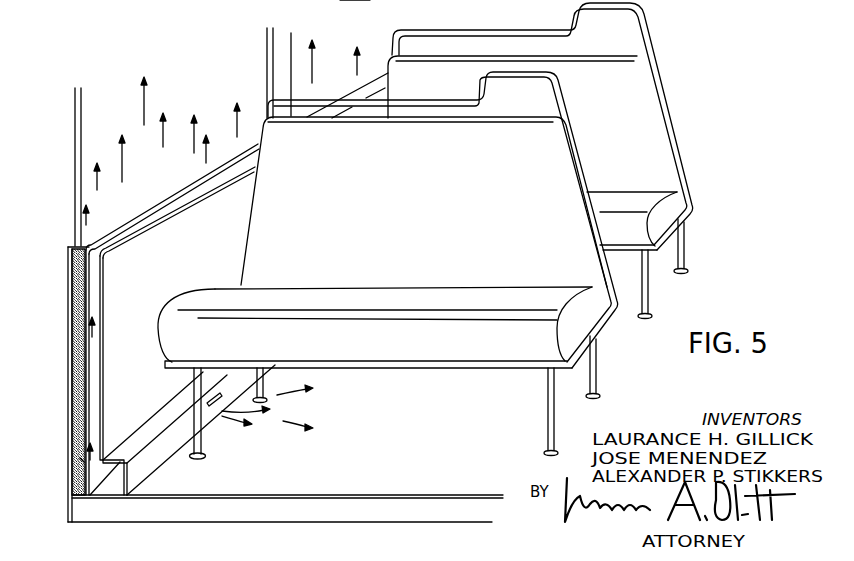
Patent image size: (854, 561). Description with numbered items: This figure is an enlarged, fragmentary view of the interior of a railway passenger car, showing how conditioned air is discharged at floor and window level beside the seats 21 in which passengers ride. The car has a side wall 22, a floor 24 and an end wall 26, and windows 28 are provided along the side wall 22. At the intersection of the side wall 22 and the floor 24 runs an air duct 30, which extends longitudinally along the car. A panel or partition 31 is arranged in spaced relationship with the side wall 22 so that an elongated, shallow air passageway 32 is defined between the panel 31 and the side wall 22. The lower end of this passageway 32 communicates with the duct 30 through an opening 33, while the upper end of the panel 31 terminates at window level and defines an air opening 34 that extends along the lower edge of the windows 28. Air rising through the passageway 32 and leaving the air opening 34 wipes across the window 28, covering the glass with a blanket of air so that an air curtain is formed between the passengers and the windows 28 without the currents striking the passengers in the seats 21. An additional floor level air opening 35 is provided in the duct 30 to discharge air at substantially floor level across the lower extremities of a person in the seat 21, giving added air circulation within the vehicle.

The seats 21 is at (694, 181).
The side wall 22 is at (84, 298).
The floor 24 is at (371, 483).
The end wall 26 is at (355, 3).
The windows 28 is at (121, 112).
The air duct 30 is at (110, 484).
The panel or partition 31 is at (102, 404).
The air passageway 32 is at (96, 367).
The opening 33 is at (80, 460).
The air opening 34 is at (88, 242).
The floor level air opening 35 is at (213, 405).